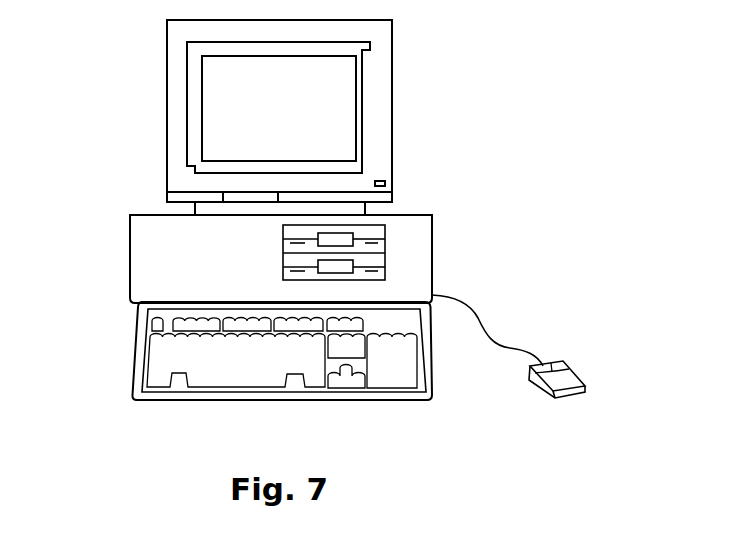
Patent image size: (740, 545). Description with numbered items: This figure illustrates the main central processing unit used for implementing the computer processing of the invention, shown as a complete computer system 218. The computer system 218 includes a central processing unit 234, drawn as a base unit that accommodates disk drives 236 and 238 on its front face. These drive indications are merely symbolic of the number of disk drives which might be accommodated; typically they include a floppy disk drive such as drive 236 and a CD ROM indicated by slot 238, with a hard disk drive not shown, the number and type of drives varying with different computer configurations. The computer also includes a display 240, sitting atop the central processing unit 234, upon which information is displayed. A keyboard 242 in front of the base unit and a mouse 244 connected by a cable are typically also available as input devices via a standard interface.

The computer system 218 is at (101, 84).
The central processing unit 234 is at (142, 198).
The floppy disk drive 236 is at (270, 245).
The CD ROM slot 238 is at (270, 276).
The display 240 is at (412, 88).
The keyboard 242 is at (125, 353).
The mouse 244 is at (601, 361).